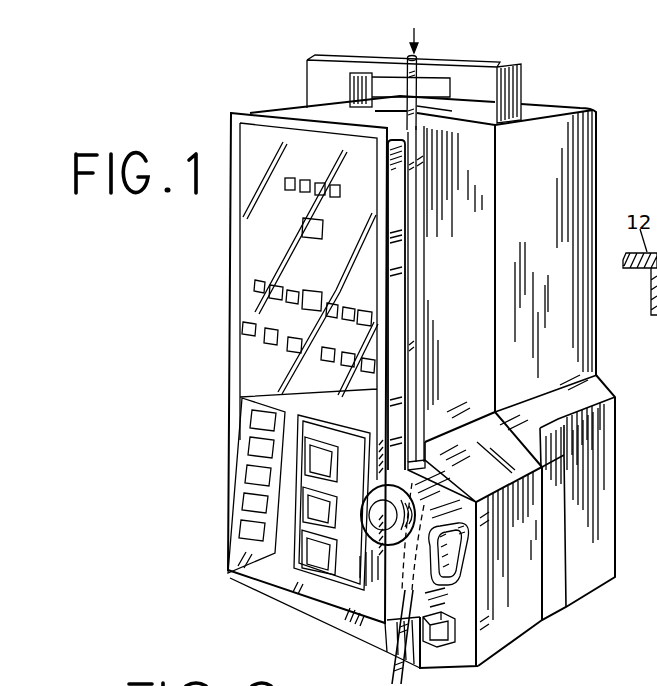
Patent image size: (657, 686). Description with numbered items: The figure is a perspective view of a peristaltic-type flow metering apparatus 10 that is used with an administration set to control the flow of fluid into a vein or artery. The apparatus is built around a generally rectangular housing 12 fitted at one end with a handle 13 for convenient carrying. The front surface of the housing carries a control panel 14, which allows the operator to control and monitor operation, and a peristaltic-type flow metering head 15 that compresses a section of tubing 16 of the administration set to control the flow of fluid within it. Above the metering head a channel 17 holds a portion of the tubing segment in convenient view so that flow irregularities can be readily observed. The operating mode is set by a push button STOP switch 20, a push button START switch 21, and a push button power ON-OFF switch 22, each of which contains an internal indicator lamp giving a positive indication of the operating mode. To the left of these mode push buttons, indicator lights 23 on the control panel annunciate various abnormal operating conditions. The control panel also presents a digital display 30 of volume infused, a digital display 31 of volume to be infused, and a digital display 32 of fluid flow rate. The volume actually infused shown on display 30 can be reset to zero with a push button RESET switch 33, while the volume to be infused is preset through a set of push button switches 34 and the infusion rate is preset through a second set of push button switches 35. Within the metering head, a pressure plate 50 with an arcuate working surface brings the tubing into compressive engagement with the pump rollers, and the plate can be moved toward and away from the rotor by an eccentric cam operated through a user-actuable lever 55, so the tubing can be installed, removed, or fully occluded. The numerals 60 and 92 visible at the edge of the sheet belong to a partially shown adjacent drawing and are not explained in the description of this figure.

The flow metering apparatus 10 is at (212, 125).
The housing 12 is at (580, 135).
The handle 13 is at (518, 84).
The control panel 14 is at (256, 307).
The flow metering head 15 is at (462, 600).
The tubing 16 is at (420, 86).
The channel 17 is at (412, 326).
The push button STOP switch 20 is at (318, 462).
The push button START switch 21 is at (318, 507).
The push button power ON-OFF switch 22 is at (322, 555).
The indicator lights 23 is at (255, 498).
The digital display of volume infused 30 is at (285, 182).
The digital display of volume to be infused 31 is at (256, 287).
The digital display of fluid flow rate 32 is at (349, 305).
The push button RESET switch 33 is at (303, 226).
The set of push button switches 34 is at (255, 366).
The second set of push button switches 35 is at (325, 380).
The pressure plate 50 is at (435, 645).
The user-actuable lever 55 is at (440, 550).
The element 60 is at (656, 332).
The element 92 is at (652, 291).